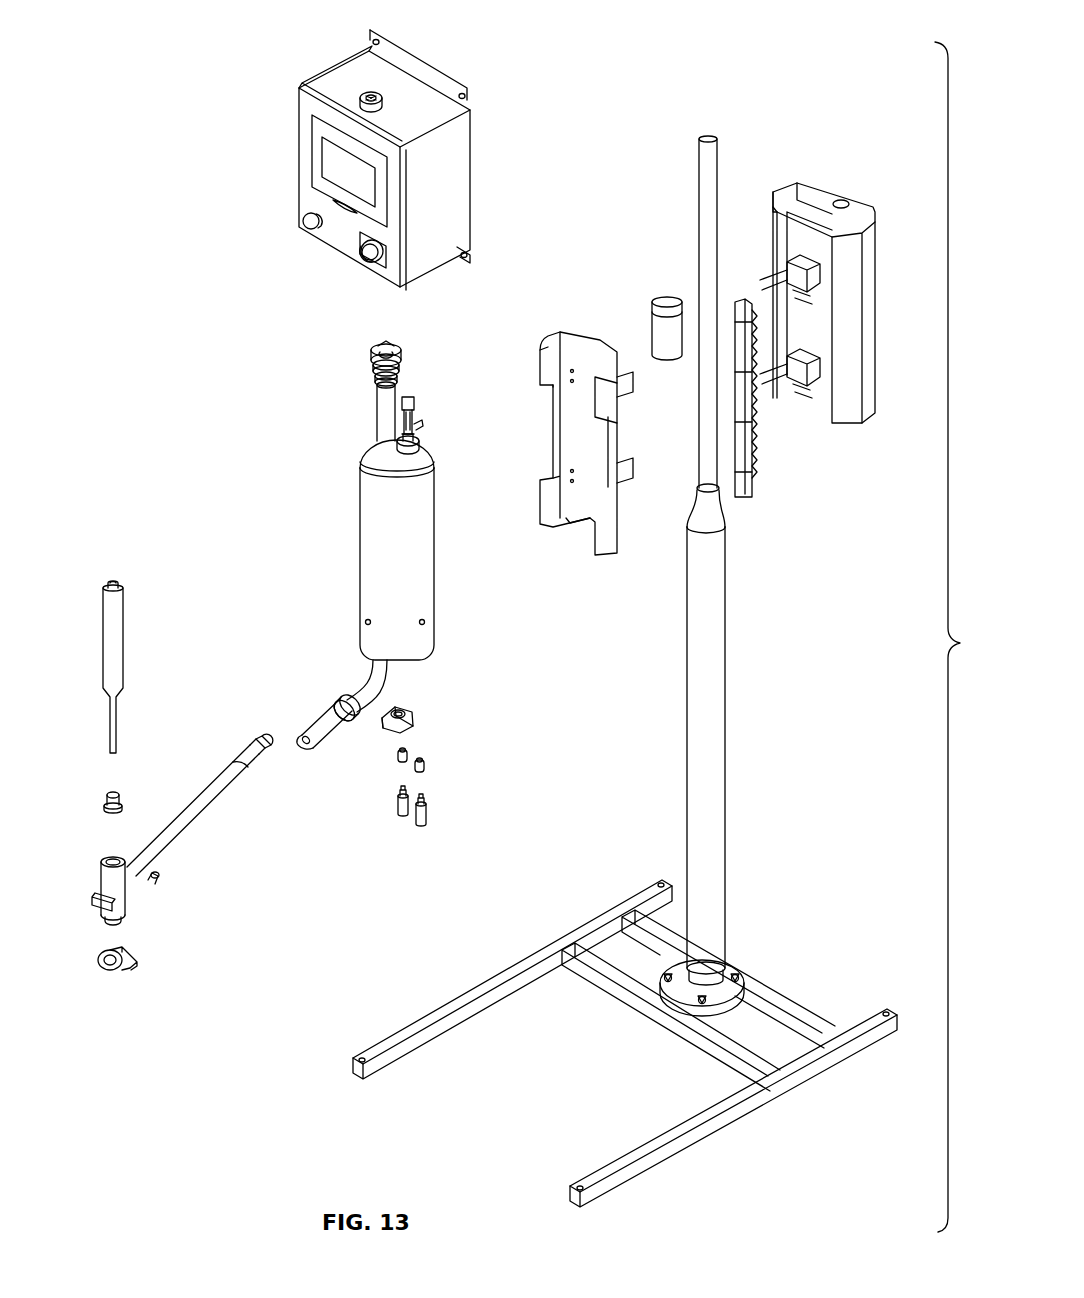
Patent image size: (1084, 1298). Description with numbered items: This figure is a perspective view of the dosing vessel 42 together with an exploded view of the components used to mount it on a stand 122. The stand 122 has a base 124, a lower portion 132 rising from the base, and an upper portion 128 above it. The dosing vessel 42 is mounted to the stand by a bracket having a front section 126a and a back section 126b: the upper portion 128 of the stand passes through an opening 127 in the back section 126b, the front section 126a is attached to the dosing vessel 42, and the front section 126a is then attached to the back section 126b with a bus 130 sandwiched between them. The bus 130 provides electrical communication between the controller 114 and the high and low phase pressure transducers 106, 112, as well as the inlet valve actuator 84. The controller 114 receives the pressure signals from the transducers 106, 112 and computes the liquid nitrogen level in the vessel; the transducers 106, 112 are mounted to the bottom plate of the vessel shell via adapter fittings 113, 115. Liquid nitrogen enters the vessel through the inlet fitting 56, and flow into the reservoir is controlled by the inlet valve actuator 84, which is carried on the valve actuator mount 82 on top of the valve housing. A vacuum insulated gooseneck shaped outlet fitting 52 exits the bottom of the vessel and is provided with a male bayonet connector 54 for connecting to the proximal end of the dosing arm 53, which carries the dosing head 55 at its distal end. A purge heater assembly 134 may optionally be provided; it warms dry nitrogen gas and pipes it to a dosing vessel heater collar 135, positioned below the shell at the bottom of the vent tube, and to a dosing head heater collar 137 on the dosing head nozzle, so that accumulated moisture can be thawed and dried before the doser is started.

The controller 114 is at (339, 66).
The upper portion 128 is at (722, 142).
The opening 127 is at (842, 200).
The inlet fitting 56 is at (378, 412).
The inlet valve actuator 84 is at (416, 405).
The valve actuator mount 82 is at (418, 440).
The purge heater assembly 134 is at (664, 365).
The back section 126b is at (878, 392).
The dosing vessel 42 is at (334, 554).
The front section 126a is at (596, 553).
The bus 130 is at (753, 497).
The stand 122 is at (752, 672).
The outlet fitting 52 is at (358, 676).
The male bayonet connector 54 is at (323, 717).
The dosing vessel heater collar 135 is at (410, 708).
The adapter fitting 113 is at (397, 758).
The adapter fitting 115 is at (428, 765).
The low phase pressure transducer 106 is at (396, 805).
The high phase pressure transducer 112 is at (428, 812).
The lower portion 132 is at (726, 781).
The dosing arm 53 is at (190, 832).
The dosing head heater collar 137 is at (122, 947).
The dosing head 55 is at (100, 882).
The base 124 is at (788, 1003).